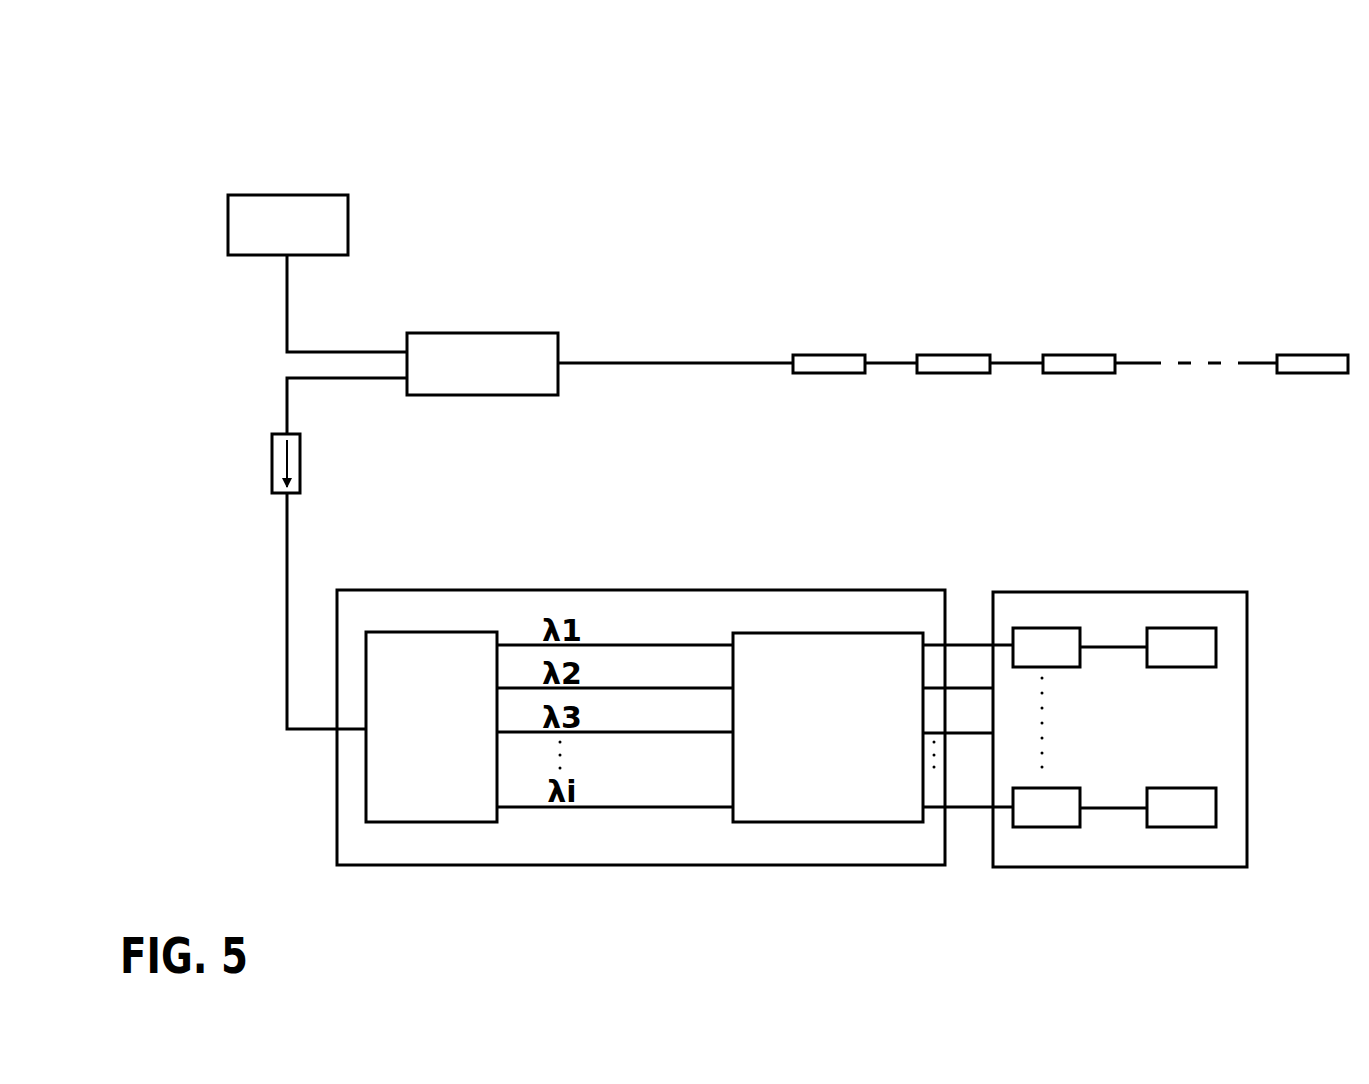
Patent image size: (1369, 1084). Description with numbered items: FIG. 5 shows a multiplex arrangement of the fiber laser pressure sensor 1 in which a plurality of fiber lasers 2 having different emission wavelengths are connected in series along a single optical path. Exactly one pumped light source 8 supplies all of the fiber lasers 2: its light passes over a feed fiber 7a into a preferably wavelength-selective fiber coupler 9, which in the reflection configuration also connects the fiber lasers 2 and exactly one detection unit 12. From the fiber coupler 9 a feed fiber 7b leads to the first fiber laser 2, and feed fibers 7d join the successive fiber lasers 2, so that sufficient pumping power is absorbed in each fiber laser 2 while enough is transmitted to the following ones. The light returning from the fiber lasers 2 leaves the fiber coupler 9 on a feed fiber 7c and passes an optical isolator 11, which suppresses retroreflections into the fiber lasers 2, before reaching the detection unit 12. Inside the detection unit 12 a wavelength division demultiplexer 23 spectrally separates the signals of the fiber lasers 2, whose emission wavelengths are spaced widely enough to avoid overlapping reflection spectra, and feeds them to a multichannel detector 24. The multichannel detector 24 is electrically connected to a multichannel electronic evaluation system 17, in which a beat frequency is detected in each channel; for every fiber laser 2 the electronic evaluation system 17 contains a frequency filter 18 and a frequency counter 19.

The fiber laser pressure sensor 1 is at (288, 132).
The fiber laser 2 is at (825, 363).
The feed fiber 7a is at (363, 350).
The feed fiber 7b is at (642, 363).
The feed fiber 7c is at (367, 380).
The feed fiber 7d is at (882, 363).
The pumped light source 8 is at (277, 250).
The fiber coupler 9 is at (471, 381).
The optical isolator 11 is at (280, 450).
The detection unit 12 is at (412, 860).
The electronic evaluation system 17 is at (1023, 864).
The frequency filter 18 is at (1027, 664).
The frequency counter 19 is at (1162, 664).
The wavelength division demultiplexer 23 is at (412, 750).
The multichannel detector 24 is at (808, 750).